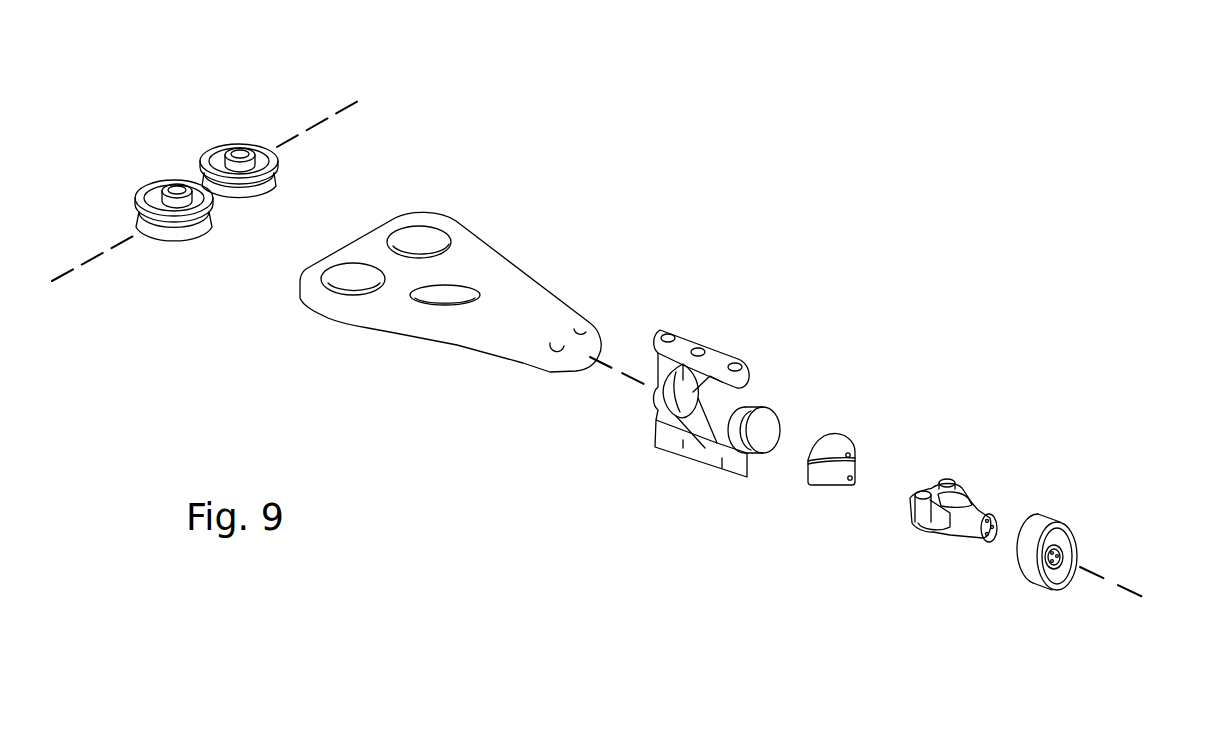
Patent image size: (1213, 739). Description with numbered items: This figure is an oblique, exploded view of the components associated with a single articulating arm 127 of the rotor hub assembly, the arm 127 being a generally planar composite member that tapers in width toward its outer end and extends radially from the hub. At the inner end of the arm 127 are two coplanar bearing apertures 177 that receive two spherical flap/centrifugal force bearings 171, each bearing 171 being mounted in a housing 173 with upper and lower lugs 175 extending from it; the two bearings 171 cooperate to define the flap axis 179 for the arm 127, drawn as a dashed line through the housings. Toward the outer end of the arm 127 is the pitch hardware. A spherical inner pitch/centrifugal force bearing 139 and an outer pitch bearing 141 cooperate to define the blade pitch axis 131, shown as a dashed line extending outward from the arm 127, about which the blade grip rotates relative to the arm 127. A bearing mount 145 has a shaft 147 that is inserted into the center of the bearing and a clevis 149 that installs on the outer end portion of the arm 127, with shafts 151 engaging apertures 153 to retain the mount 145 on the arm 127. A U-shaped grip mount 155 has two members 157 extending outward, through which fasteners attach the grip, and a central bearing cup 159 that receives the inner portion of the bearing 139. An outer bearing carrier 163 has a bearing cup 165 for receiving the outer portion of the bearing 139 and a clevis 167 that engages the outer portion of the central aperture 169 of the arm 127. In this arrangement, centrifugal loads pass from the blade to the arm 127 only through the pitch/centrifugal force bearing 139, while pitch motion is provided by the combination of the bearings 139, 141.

The articulating arm 127 is at (526, 295).
The blade pitch axis 131 is at (1128, 592).
The spherical inner pitch/centrifugal force bearing 139 is at (773, 425).
The outer pitch bearing 141 is at (1068, 540).
The bearing mount 145 is at (973, 503).
The shaft 147 is at (965, 528).
The clevis 149 is at (917, 533).
The shafts 151 is at (952, 479).
The apertures 153 is at (585, 332).
The U-shaped grip mount 155 is at (718, 358).
The members 157 is at (712, 462).
The central bearing cup 159 is at (675, 400).
The outer bearing carrier 163 is at (856, 441).
The bearing cup 165 is at (826, 432).
The clevis 167 is at (836, 470).
The central aperture 169 is at (428, 302).
The spherical flap/centrifugal force bearing 171 is at (265, 195).
The housing 173 is at (205, 170).
The lugs 175 is at (238, 152).
The bearing apertures 177 is at (446, 234).
The flap axis 179 is at (313, 128).